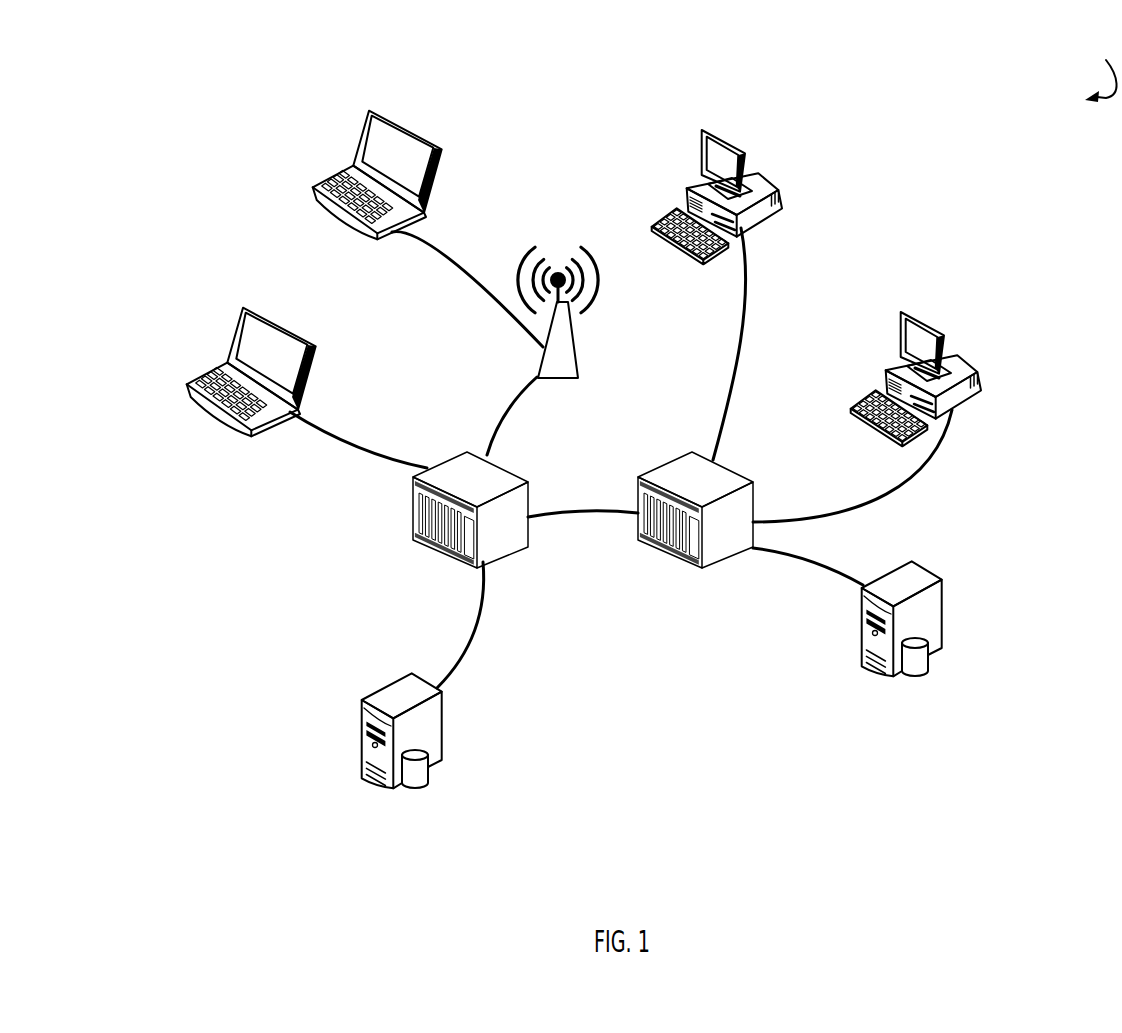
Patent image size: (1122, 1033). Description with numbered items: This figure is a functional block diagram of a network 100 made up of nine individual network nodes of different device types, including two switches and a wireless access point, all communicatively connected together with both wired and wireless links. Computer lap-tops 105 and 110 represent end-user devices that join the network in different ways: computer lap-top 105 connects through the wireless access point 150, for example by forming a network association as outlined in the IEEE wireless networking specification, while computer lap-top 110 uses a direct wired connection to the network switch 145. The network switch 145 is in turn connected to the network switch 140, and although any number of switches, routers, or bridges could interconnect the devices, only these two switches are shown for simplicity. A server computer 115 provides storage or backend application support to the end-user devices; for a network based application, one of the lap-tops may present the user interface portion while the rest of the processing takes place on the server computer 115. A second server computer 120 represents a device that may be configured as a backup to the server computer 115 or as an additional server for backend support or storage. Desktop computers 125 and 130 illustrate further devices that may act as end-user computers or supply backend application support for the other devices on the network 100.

The network 100 is at (1103, 65).
The computer lap-top 105 is at (352, 168).
The computer lap-top 110 is at (188, 377).
The server computer 115 is at (362, 702).
The server computer 120 is at (863, 660).
The desktop computer 125 is at (893, 368).
The desktop computer 130 is at (690, 187).
The network switch 140 is at (682, 458).
The network switch 145 is at (413, 520).
The wireless access point 150 is at (567, 337).